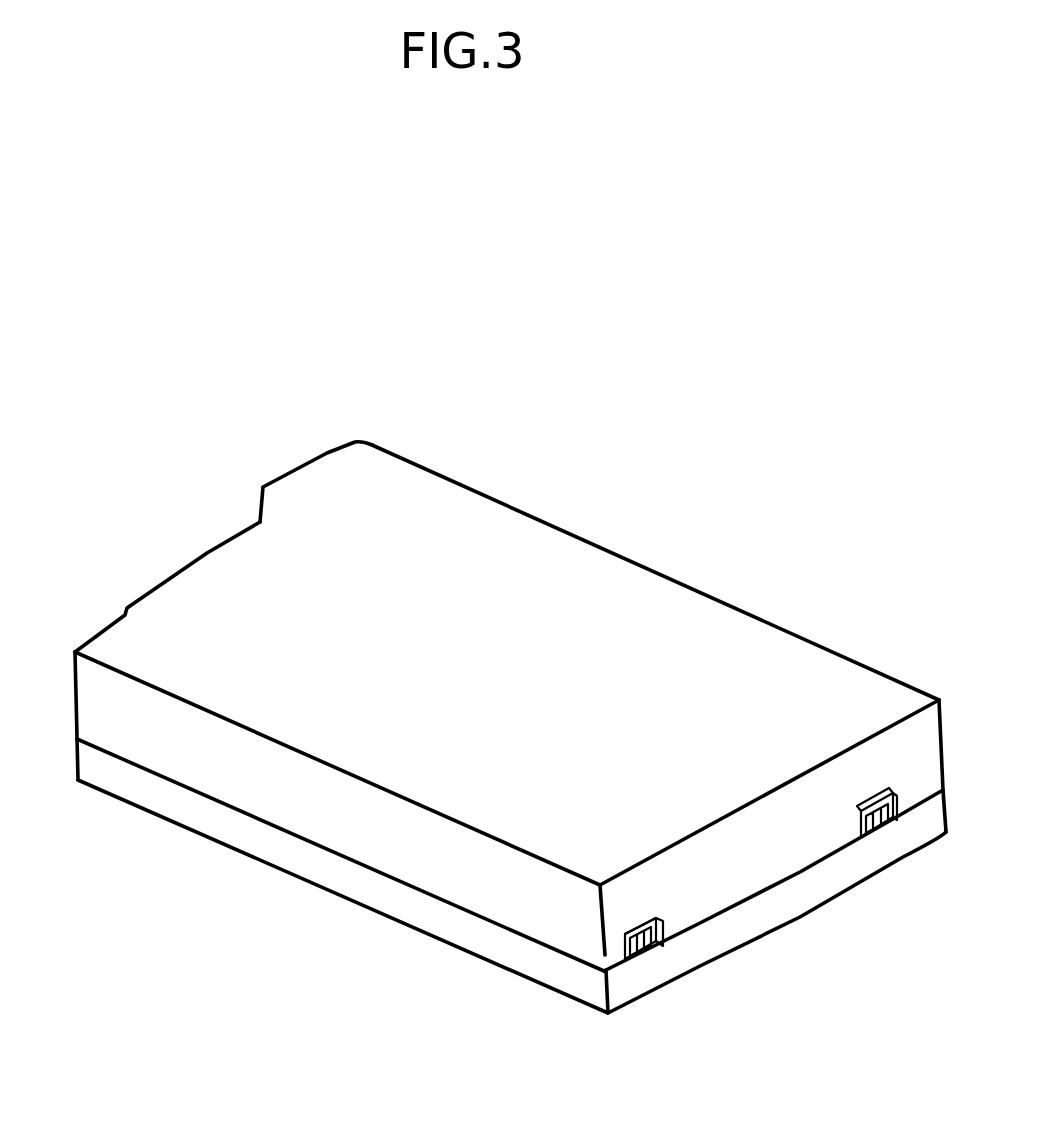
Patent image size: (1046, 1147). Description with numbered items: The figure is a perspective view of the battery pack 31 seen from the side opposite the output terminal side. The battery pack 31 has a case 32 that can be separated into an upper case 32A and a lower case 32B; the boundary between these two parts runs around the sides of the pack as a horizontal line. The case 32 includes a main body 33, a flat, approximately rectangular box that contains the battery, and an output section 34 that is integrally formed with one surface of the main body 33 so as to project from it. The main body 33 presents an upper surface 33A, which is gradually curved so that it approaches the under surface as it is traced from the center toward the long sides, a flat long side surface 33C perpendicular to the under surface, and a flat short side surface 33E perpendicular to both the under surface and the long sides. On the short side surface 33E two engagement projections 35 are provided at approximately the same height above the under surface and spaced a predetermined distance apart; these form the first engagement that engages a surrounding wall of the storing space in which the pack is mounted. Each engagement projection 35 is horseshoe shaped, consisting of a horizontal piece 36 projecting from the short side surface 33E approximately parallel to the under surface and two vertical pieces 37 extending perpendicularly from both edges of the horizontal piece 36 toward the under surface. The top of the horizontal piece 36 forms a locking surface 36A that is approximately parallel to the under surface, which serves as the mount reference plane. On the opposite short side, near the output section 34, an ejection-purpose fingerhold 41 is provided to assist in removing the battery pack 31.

The battery pack 31 is at (663, 438).
The case 32 is at (90, 871).
The upper case 32A is at (228, 787).
The lower case 32B is at (280, 857).
The main body 33 is at (638, 577).
The upper surface 33A is at (792, 648).
The long side surface 33C is at (443, 883).
The short side surface 33E is at (803, 902).
The output section 34 is at (330, 470).
The engagement projection 35 is at (762, 1050).
The horizontal piece 36 is at (655, 955).
The locking surface 36A is at (652, 918).
The vertical piece 37 is at (622, 965).
The ejection-purpose fingerhold 41 is at (215, 572).